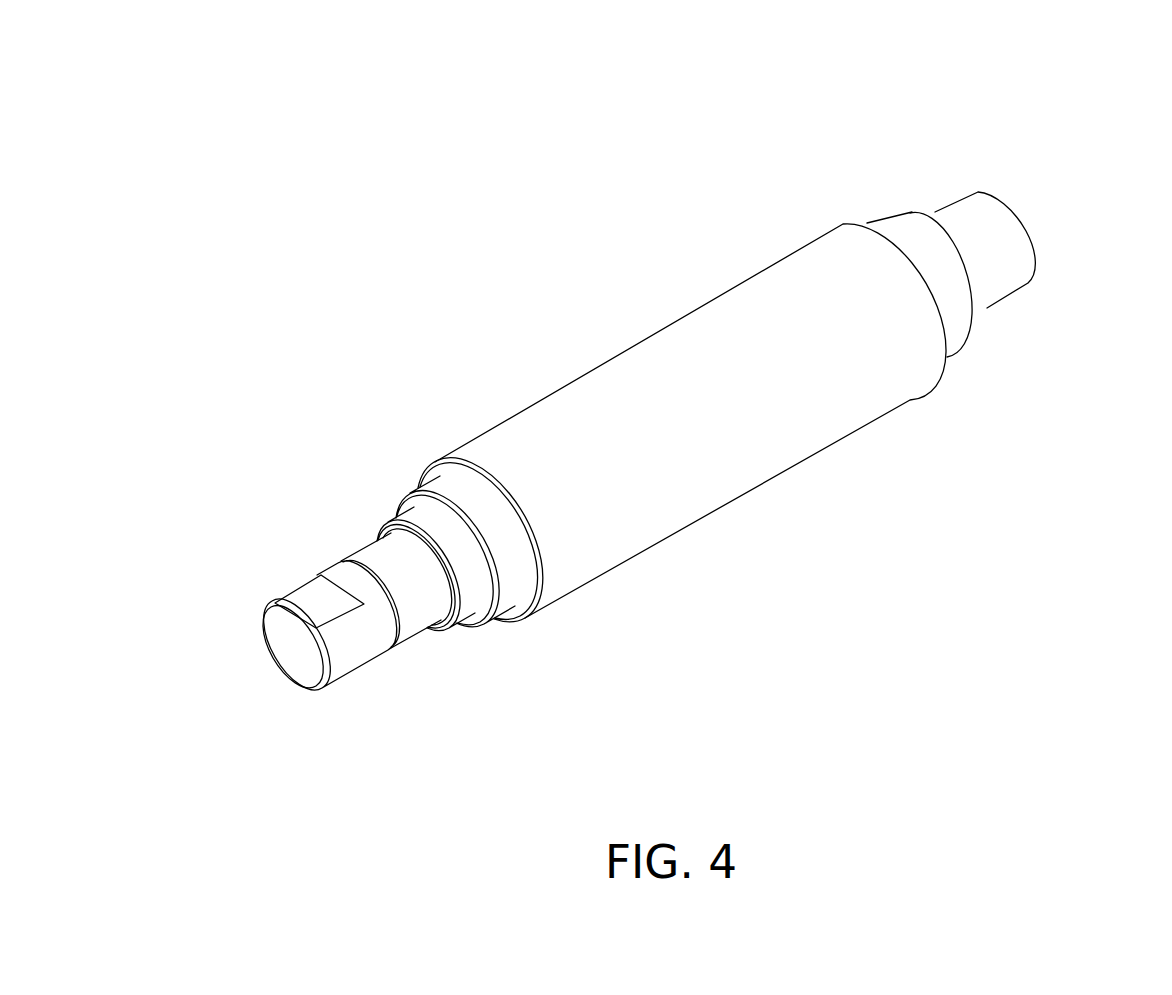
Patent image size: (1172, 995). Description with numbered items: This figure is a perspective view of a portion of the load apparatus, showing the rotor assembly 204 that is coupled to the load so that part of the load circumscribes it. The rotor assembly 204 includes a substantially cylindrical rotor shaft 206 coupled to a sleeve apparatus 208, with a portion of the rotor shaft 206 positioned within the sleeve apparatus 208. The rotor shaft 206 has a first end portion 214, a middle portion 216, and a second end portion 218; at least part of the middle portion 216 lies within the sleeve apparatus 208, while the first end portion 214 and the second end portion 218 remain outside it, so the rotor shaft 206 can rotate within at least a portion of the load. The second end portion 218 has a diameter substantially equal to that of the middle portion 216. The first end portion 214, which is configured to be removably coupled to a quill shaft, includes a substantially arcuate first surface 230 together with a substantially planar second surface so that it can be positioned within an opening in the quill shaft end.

The rotor assembly 204 is at (903, 80).
The rotor shaft 206 is at (385, 687).
The sleeve apparatus 208 is at (401, 424).
The first end portion 214 is at (221, 631).
The middle portion 216 is at (340, 517).
The second end portion 218 is at (1064, 285).
The first surface 230 is at (343, 688).